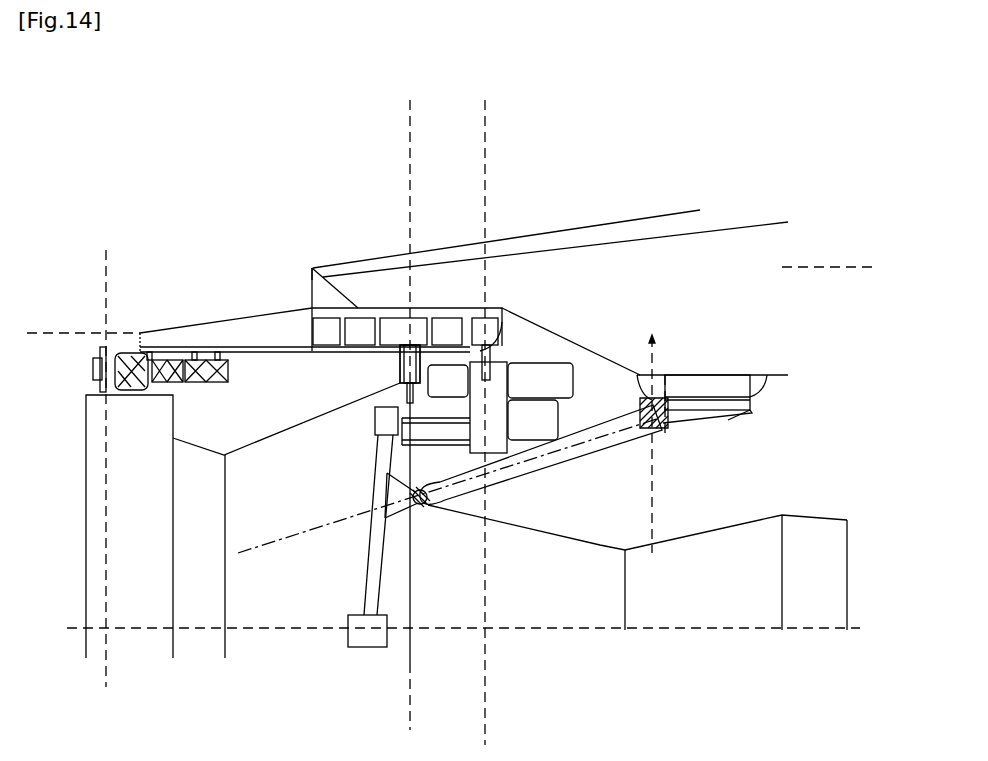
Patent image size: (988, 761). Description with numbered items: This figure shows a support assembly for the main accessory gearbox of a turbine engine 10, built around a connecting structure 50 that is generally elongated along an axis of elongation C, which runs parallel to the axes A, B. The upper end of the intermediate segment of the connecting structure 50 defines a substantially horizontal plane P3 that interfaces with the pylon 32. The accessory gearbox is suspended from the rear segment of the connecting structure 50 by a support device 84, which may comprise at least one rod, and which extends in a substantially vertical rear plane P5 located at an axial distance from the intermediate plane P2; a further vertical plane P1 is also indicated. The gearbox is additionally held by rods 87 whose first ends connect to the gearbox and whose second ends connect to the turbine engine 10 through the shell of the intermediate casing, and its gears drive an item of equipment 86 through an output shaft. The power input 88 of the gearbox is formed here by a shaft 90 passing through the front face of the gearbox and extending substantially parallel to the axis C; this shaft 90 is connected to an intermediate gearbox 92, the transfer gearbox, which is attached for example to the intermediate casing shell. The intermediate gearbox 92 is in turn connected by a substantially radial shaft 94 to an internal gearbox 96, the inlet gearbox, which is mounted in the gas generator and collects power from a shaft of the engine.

The turbine engine 10 is at (835, 499).
The pylon 32 is at (750, 192).
The connecting structure 50 is at (228, 312).
The support device 84 is at (547, 370).
The item of equipment 86 is at (442, 372).
The rods 87 is at (436, 507).
The power input 88 is at (408, 357).
The shaft 90 is at (400, 286).
The intermediate gearbox 92 is at (390, 420).
The radial shaft 94 is at (382, 448).
The internal gearbox 96 is at (357, 650).
The axis A is at (836, 632).
The axis B is at (843, 267).
The axis of elongation C is at (68, 331).
The plane P1 is at (106, 289).
The intermediate plane P2 is at (410, 105).
The horizontal plane P3 is at (312, 268).
The rear plane P5 is at (485, 152).